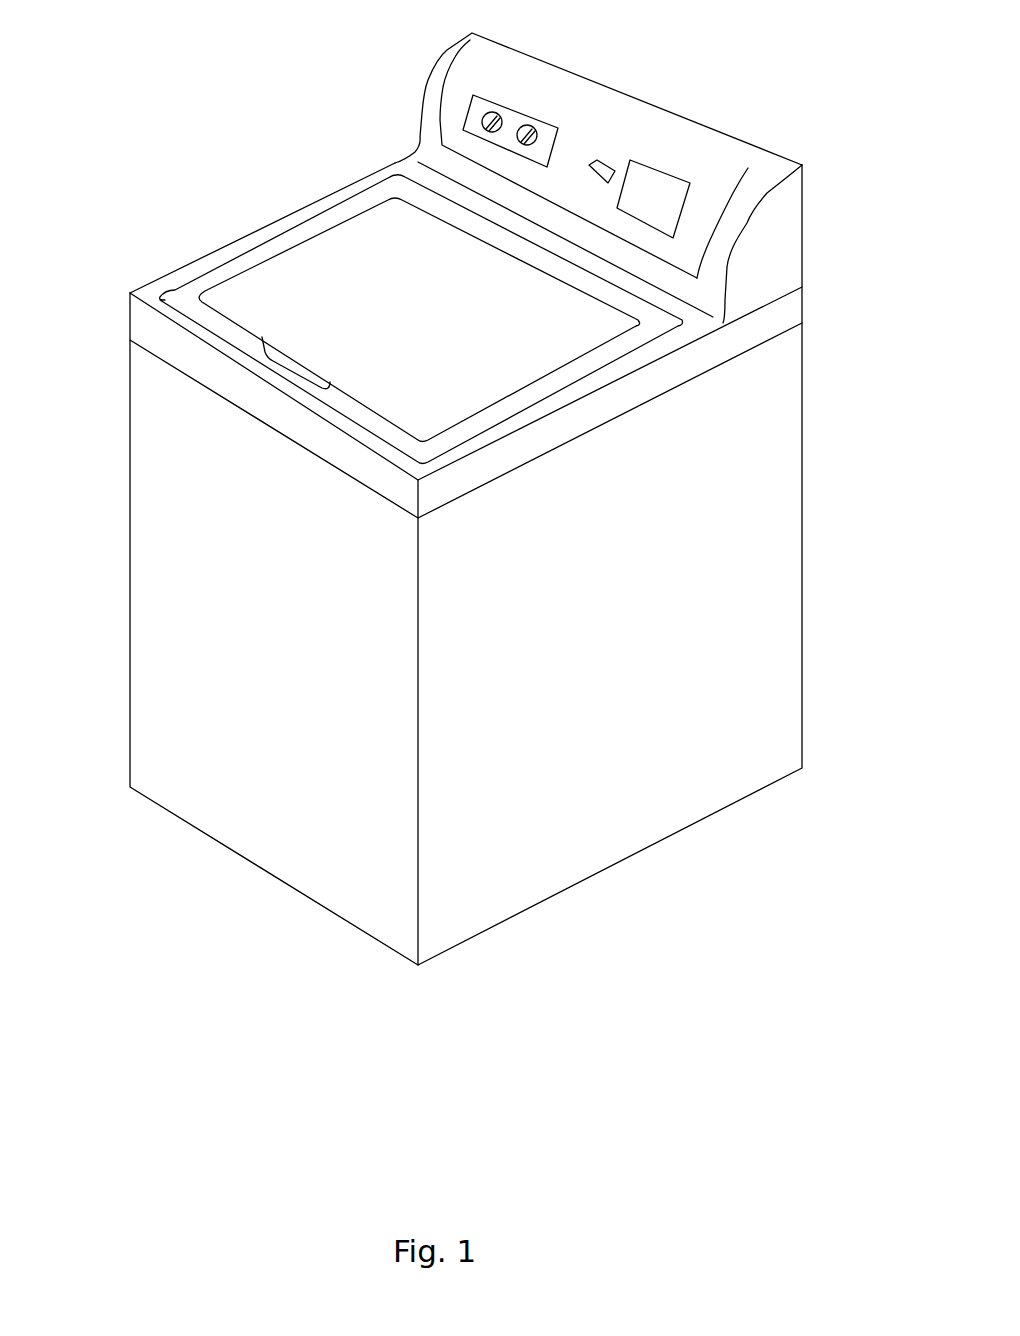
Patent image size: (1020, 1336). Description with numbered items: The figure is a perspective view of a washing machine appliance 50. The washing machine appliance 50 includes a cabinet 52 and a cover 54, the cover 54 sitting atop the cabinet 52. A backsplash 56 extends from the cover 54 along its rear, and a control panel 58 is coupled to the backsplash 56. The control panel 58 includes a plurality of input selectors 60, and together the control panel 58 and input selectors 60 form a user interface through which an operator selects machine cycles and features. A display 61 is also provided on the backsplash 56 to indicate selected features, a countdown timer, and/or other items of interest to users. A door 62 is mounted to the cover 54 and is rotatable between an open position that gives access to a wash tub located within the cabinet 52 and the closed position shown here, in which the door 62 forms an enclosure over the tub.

The washing machine appliance 50 is at (205, 83).
The cabinet 52 is at (773, 570).
The cover 54 is at (185, 297).
The backsplash 56 is at (633, 123).
The control panel 58 is at (542, 133).
The input selectors 60 is at (521, 127).
The display 61 is at (663, 192).
The door 62 is at (287, 275).